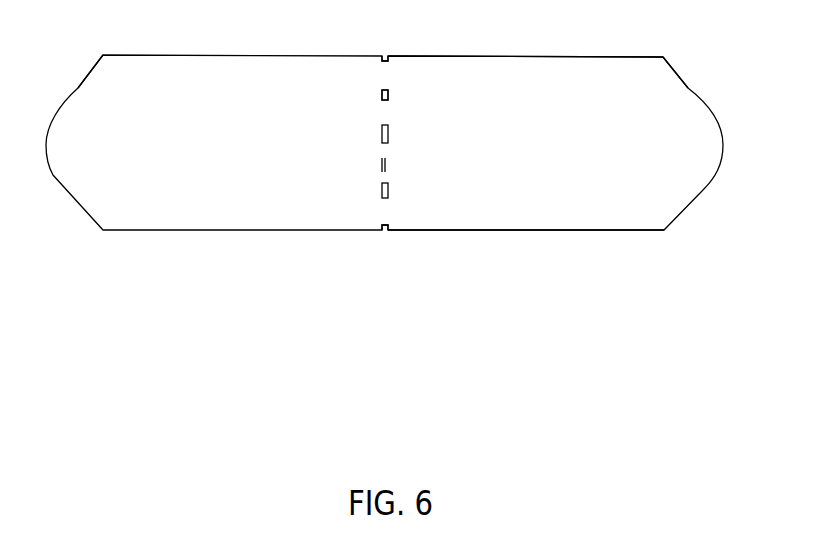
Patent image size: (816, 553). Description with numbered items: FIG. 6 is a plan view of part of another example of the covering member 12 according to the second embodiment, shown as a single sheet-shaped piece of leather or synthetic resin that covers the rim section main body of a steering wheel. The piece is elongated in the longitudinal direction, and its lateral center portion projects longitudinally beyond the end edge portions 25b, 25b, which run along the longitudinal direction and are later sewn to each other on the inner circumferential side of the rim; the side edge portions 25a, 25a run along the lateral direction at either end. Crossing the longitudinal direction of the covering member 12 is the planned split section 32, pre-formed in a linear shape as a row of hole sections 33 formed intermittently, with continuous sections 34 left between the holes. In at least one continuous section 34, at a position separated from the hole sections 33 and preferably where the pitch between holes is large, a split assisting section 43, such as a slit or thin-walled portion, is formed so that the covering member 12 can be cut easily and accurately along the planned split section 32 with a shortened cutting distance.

The covering member 12 is at (577, 66).
The side edge portion 25a is at (81, 86).
The end edge portion 25b is at (462, 55).
The planned split section 32 is at (390, 95).
The hole section 33 is at (384, 54).
The continuous section 34 is at (386, 75).
The split assisting section 43 is at (387, 165).